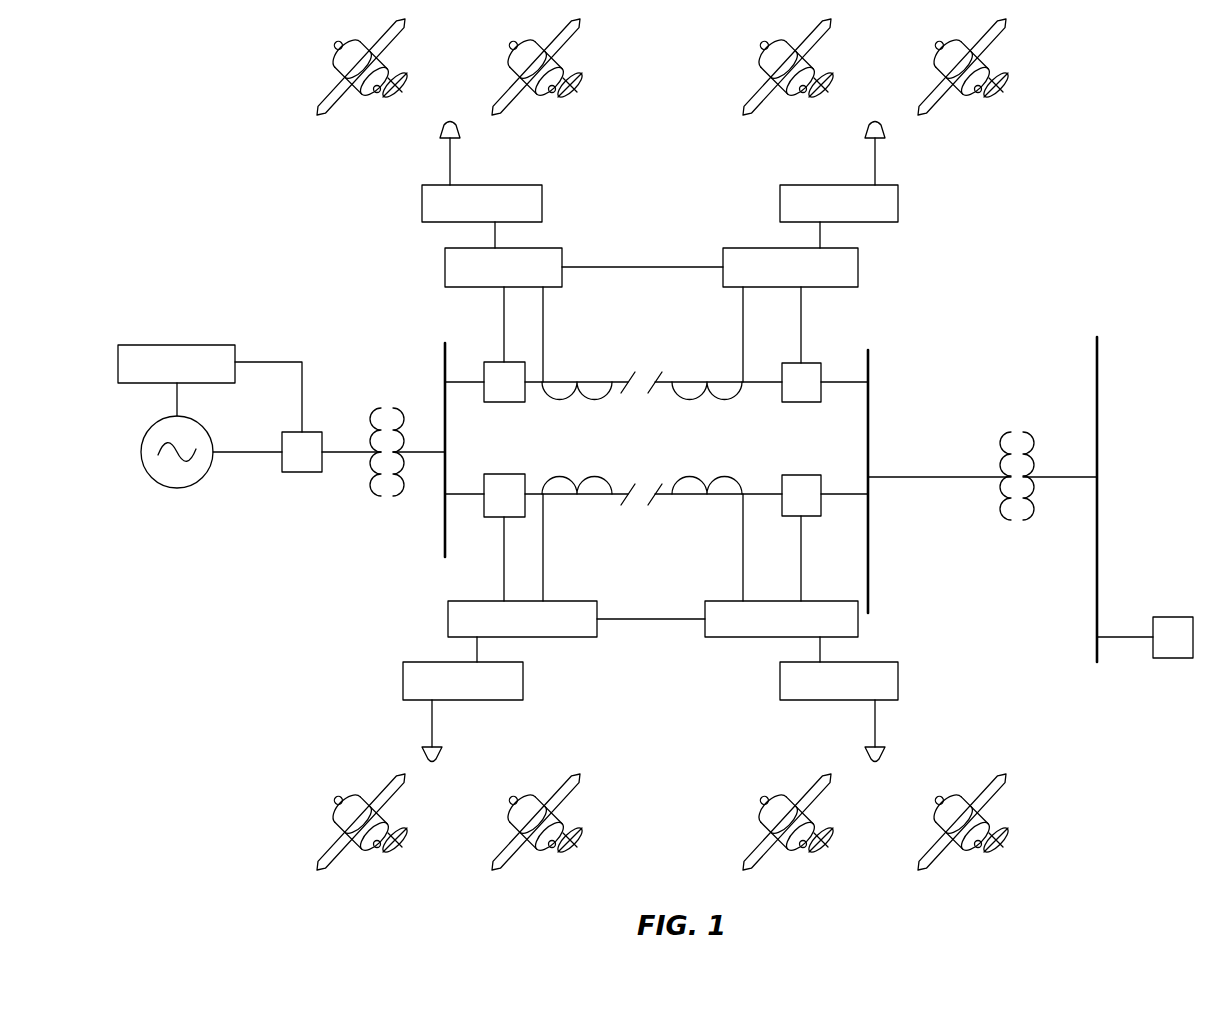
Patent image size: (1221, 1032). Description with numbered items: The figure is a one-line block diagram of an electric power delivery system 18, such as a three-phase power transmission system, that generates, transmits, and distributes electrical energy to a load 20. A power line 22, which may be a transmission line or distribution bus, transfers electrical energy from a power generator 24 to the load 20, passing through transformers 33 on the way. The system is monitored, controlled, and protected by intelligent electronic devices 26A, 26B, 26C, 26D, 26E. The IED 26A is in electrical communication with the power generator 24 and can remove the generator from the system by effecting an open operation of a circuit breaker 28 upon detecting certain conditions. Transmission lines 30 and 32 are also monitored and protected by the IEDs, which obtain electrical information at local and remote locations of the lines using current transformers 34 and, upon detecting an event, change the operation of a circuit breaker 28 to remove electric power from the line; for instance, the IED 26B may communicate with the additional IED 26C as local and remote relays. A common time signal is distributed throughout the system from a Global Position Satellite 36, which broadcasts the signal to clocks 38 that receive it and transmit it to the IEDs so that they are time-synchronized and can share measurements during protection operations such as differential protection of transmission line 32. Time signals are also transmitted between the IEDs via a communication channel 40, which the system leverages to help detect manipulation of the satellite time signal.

The electric power delivery system 18 is at (1122, 206).
The load 20 is at (1175, 617).
The power line 22 is at (251, 453).
The power generator 24 is at (180, 488).
The intelligent electronic device 26A is at (178, 345).
The intelligent electronic device 26B is at (445, 263).
The intelligent electronic device 26C is at (858, 263).
The intelligent electronic device 26D is at (448, 612).
The intelligent electronic device 26E is at (762, 638).
The circuit breaker 28 is at (297, 473).
The transmission line 30 is at (838, 380).
The transmission line 32 is at (838, 496).
The transformer 33 is at (376, 410).
The current transformer 34 is at (596, 399).
The Global Position Satellite 36 is at (302, 70).
The clock 38 is at (422, 196).
The communication channel 40 is at (641, 267).